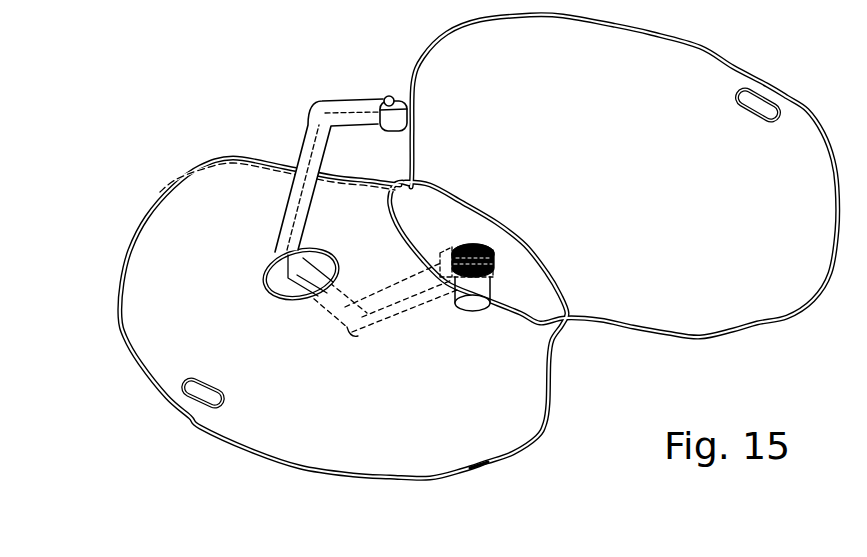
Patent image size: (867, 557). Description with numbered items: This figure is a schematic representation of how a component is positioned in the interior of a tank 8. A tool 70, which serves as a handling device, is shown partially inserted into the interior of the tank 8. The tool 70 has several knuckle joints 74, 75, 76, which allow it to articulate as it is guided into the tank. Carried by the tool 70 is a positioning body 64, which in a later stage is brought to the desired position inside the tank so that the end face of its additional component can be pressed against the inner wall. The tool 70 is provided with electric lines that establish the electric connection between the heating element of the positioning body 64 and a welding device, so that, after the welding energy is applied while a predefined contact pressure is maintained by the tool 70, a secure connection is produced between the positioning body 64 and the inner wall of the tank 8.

The tank 8 is at (493, 438).
The positioning body 64 is at (493, 280).
The tool 70 is at (296, 143).
The knuckle joint 74 is at (332, 100).
The knuckle joint 75 is at (266, 250).
The knuckle joint 76 is at (357, 340).